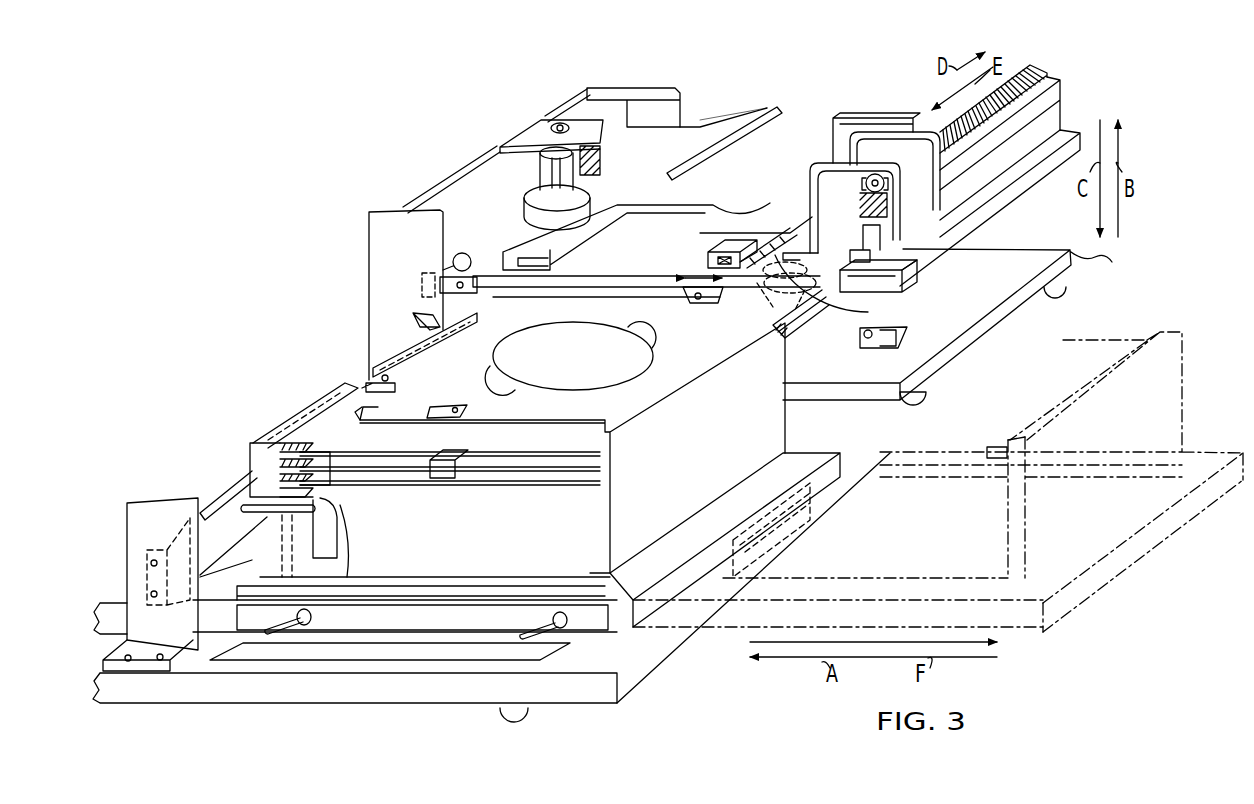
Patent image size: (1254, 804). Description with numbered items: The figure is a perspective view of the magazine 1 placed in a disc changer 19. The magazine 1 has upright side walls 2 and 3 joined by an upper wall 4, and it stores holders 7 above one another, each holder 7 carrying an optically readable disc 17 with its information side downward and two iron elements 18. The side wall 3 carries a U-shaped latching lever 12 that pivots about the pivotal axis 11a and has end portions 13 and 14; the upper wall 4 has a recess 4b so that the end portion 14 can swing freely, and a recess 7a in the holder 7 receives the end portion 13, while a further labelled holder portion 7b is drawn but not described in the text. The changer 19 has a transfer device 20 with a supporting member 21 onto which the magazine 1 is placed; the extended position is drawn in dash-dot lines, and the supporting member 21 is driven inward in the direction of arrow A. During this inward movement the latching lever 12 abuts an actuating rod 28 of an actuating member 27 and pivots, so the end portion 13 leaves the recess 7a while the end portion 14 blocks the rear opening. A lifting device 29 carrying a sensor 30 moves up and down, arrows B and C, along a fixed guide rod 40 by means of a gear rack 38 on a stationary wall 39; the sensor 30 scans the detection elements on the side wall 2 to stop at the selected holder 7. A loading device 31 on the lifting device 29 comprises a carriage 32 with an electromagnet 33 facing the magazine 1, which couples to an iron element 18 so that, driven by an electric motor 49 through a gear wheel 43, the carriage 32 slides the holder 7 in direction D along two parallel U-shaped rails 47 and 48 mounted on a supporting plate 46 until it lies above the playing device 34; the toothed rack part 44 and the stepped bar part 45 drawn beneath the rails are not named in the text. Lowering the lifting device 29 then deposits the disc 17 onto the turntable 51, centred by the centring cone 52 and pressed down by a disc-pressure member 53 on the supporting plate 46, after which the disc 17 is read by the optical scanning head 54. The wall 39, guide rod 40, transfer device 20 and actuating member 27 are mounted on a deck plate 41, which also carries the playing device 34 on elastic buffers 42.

The magazine 1 is at (352, 376).
The side wall 2 is at (683, 505).
The side wall 3 is at (340, 390).
The upper wall 4 is at (493, 440).
The recess 4b is at (327, 443).
The holder 7 is at (637, 400).
The recess 7a is at (473, 300).
The support plate tab 7b is at (367, 413).
The pivotal axis 11a is at (390, 380).
The latching lever 12 is at (412, 323).
The end portion 13 is at (447, 343).
The end portion 14 is at (307, 427).
The disc 17 is at (593, 328).
The iron element 18 is at (447, 480).
The disc changer 19 is at (412, 188).
The transfer device 20 is at (614, 626).
The supporting member 21 is at (697, 593).
The actuating member 27 is at (205, 492).
The actuating rod 28 is at (248, 505).
The lifting device 29 is at (704, 108).
The sensor 30 is at (897, 263).
The loading device 31 is at (893, 118).
The carriage 32 is at (867, 130).
The electromagnet 33 is at (735, 268).
The playing device 34 is at (1028, 266).
The gear rack 38 is at (593, 170).
The stationary wall 39 is at (617, 110).
The guide rod 40 is at (557, 157).
The deck plate 41 is at (633, 647).
The elastic buffer 42 is at (920, 398).
The gear wheel 43 is at (893, 183).
The rack 44 is at (1035, 62).
The rack carrier 45 is at (1063, 113).
The supporting plate 46 is at (1067, 137).
The rail 47 is at (743, 130).
The rail 48 is at (870, 265).
The electric motor 49 is at (800, 187).
The turntable 51 is at (793, 330).
The centring cone 52 is at (862, 311).
The disc-pressure member 53 is at (754, 203).
The optical scanning head 54 is at (868, 348).